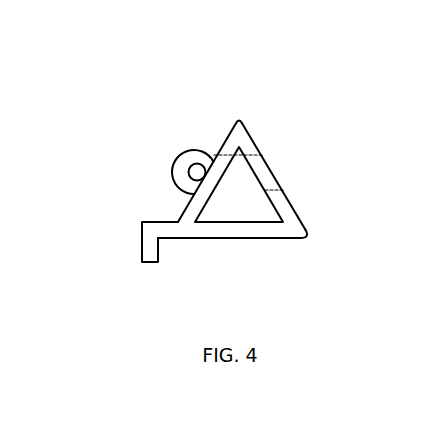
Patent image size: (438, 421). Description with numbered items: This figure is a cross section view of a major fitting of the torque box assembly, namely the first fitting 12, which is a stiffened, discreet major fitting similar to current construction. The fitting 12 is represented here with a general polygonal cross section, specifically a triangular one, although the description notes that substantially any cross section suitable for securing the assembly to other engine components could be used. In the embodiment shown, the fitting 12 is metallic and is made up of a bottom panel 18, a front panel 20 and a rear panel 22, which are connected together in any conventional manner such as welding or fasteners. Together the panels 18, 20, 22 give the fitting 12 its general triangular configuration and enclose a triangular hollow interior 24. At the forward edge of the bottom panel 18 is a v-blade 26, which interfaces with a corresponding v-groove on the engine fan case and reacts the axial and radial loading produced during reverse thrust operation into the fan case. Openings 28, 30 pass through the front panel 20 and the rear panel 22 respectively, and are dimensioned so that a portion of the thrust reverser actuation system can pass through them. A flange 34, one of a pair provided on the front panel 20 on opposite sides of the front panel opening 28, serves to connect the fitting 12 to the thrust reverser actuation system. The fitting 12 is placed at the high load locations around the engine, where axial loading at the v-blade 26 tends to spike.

The first fitting 12 is at (215, 175).
The bottom panel 18 is at (243, 228).
The front panel 20 is at (224, 133).
The rear panel 22 is at (268, 157).
The triangular hollow interior 24 is at (258, 209).
The v-blade 26 is at (158, 243).
The front panel opening 28 is at (208, 185).
The rear panel opening 30 is at (270, 180).
The flange 34 is at (182, 162).